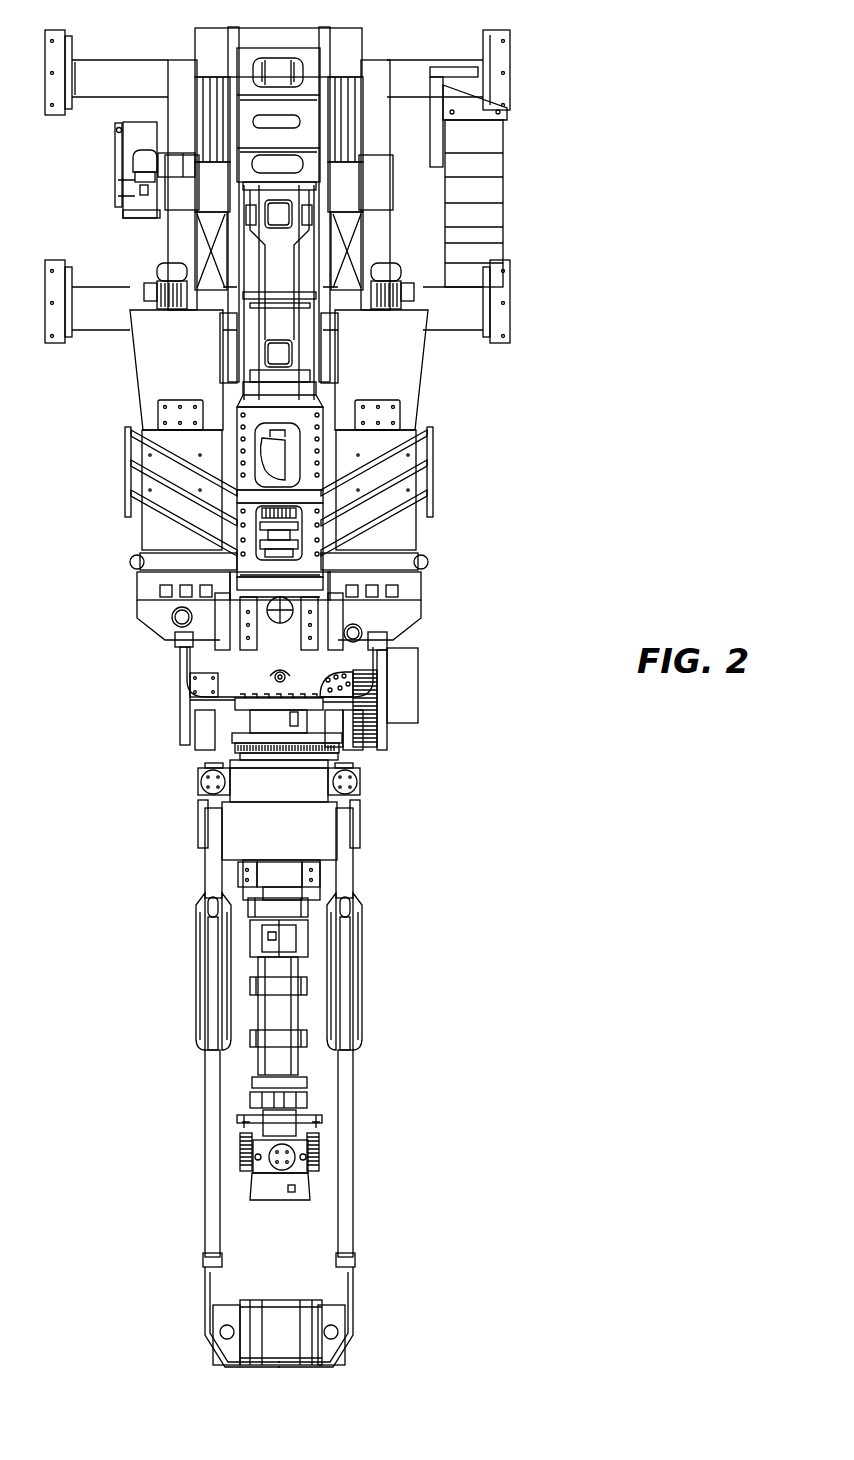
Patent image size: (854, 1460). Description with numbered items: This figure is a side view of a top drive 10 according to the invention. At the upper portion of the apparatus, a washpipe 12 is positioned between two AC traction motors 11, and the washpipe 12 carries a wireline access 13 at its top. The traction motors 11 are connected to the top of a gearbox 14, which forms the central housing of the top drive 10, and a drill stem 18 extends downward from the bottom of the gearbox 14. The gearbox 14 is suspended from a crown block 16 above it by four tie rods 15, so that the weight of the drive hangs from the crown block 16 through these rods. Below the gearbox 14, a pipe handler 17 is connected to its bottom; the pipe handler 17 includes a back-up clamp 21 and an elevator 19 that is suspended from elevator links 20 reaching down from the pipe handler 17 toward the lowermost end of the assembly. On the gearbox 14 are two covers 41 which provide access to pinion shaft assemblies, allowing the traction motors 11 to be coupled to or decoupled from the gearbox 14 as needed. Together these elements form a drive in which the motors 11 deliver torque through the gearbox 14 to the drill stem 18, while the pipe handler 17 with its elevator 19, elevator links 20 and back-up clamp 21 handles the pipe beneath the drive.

The top drive 10 is at (447, 750).
The AC traction motors 11 is at (158, 519).
The washpipe 12 is at (283, 533).
The wireline access 13 is at (283, 472).
The gearbox 14 is at (348, 655).
The tie rods 15 is at (323, 333).
The crown block 16 is at (350, 108).
The pipe handler 17 is at (317, 839).
The drill stem 18 is at (303, 1013).
The elevator 19 is at (350, 1340).
The elevator links 20 is at (350, 1174).
The back-up clamp 21 is at (322, 1123).
The covers 41 is at (377, 654).